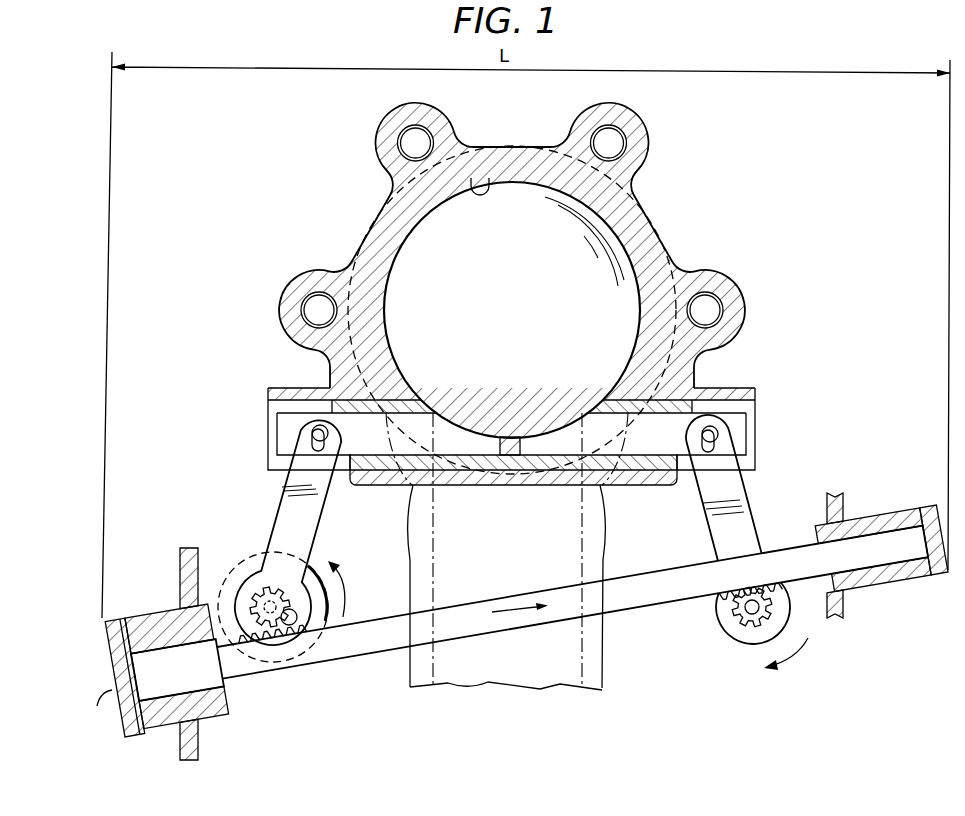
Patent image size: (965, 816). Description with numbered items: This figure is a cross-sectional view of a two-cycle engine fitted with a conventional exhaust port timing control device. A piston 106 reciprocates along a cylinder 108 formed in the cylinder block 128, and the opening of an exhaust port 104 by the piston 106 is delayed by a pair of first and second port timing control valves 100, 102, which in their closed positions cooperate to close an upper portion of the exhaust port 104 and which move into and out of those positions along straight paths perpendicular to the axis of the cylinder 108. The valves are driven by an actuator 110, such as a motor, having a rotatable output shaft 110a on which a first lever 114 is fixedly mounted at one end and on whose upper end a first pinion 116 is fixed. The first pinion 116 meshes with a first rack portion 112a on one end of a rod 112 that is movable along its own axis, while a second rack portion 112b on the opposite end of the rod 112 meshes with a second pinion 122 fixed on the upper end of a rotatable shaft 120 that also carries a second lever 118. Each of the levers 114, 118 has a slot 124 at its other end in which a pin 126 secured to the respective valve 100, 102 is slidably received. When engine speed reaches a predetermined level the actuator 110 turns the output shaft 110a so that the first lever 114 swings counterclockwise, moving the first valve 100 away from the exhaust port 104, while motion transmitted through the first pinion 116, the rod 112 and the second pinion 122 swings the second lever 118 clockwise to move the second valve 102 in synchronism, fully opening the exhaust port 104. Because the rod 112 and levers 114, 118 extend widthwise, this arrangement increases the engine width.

The first port timing control valve 100 is at (458, 440).
The second port timing control valve 102 is at (592, 428).
The exhaust port 104 is at (510, 428).
The piston 106 is at (646, 248).
The cylinder 108 is at (488, 180).
The actuator 110 is at (257, 557).
The output shaft 110a is at (262, 592).
The rod 112 is at (645, 592).
The first rack portion 112a is at (306, 628).
The second rack portion 112b is at (722, 614).
The first lever 114 is at (287, 507).
The first pinion 116 is at (250, 642).
The second lever 118 is at (737, 498).
The rotatable shaft 120 is at (760, 622).
The second pinion 122 is at (736, 618).
The slot 124 is at (276, 418).
The pin 126 is at (312, 438).
The cylinder block 128 is at (385, 220).